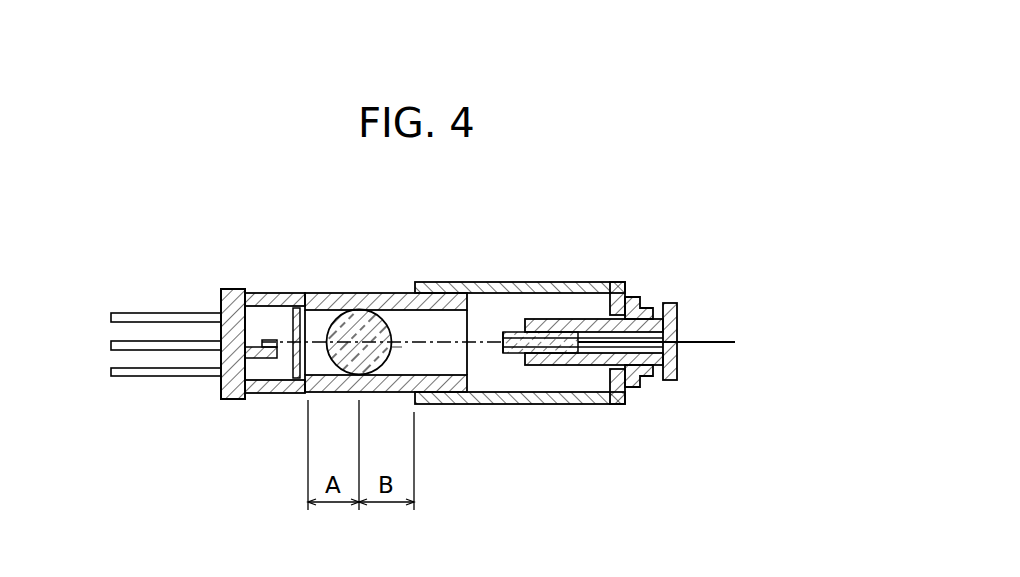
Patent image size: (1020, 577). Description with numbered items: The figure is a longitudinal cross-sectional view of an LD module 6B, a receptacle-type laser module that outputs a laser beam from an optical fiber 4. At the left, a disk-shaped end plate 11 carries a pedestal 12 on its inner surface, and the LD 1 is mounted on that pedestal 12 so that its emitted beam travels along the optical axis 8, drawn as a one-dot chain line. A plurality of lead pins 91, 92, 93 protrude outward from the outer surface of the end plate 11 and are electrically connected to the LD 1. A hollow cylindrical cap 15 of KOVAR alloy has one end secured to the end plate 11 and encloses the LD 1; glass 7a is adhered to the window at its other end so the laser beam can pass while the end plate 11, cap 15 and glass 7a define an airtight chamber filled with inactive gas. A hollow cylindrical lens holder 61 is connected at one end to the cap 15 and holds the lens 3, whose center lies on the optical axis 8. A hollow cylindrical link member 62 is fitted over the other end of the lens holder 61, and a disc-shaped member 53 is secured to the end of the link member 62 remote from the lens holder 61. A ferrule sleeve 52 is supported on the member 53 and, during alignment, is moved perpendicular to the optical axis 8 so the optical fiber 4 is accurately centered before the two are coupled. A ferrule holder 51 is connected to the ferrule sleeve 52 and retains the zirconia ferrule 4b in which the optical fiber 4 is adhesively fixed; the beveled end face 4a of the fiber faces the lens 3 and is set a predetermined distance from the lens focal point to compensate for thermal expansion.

The LD 1 is at (224, 344).
The lens 3 is at (386, 322).
The optical fiber 4 is at (690, 340).
The end face of the optical fiber 4a is at (503, 336).
The ferrule 4b is at (519, 353).
The LD module 6B is at (547, 323).
The glass 7a is at (300, 308).
The optical axis 8 is at (397, 347).
The end plate 11 is at (232, 399).
The pedestal 12 is at (255, 340).
The cap 15 is at (282, 393).
The ferrule holder 51 is at (560, 319).
The ferrule sleeve 52 is at (630, 404).
The disc-shaped member 53 is at (632, 297).
The lens holder 61 is at (340, 392).
The link member 62 is at (468, 404).
The lead pin 91 is at (136, 313).
The lead pin 92 is at (185, 341).
The lead pin 93 is at (163, 376).